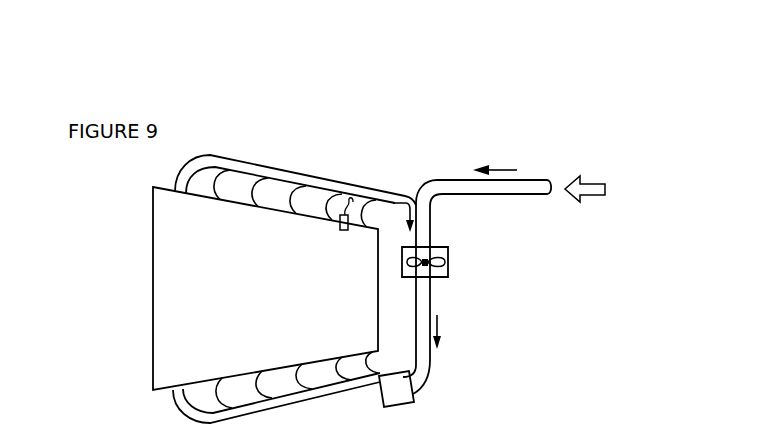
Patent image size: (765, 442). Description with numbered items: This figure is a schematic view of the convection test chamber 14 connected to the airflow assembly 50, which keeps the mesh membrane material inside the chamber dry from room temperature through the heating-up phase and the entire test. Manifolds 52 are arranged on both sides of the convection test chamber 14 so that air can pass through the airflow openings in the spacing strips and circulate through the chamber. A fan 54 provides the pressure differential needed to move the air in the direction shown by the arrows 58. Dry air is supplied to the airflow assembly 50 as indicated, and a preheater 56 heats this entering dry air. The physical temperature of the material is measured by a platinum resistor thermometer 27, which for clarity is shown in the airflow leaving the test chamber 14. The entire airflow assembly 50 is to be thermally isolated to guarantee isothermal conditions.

The airflow assembly 50 is at (362, 156).
The convection test chamber 14 is at (165, 283).
The manifolds 52 is at (232, 163).
The platinum resistor thermometer 27 is at (347, 210).
The arrows 58 is at (567, 188).
The fan 54 is at (448, 258).
The preheater 56 is at (405, 390).